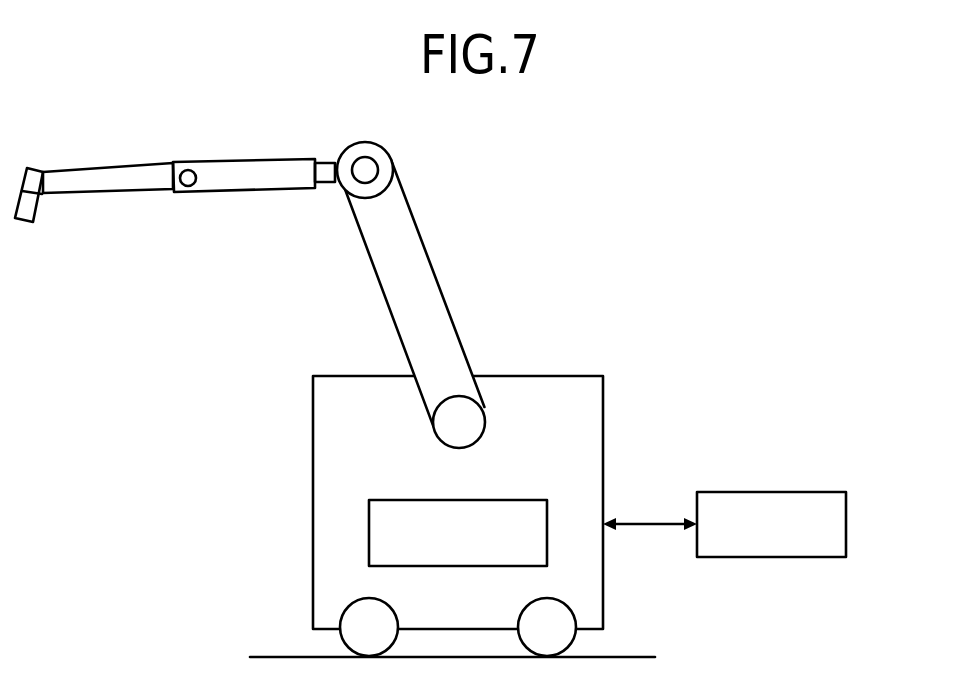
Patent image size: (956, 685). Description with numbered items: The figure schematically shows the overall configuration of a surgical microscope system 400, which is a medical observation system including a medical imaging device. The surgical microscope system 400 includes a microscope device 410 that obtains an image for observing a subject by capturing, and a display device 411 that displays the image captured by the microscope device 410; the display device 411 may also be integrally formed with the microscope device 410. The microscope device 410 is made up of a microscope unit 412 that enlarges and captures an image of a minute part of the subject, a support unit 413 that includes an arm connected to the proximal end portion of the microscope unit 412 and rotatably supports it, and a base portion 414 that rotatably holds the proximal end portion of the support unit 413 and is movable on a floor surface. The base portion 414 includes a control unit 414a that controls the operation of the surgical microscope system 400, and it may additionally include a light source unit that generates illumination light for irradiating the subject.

The surgical microscope system 400 is at (634, 268).
The microscope device 410 is at (410, 209).
The display device 411 is at (847, 527).
The microscope unit 412 is at (30, 203).
The support unit 413 is at (230, 185).
The base portion 414 is at (313, 535).
The control unit 414a is at (493, 478).